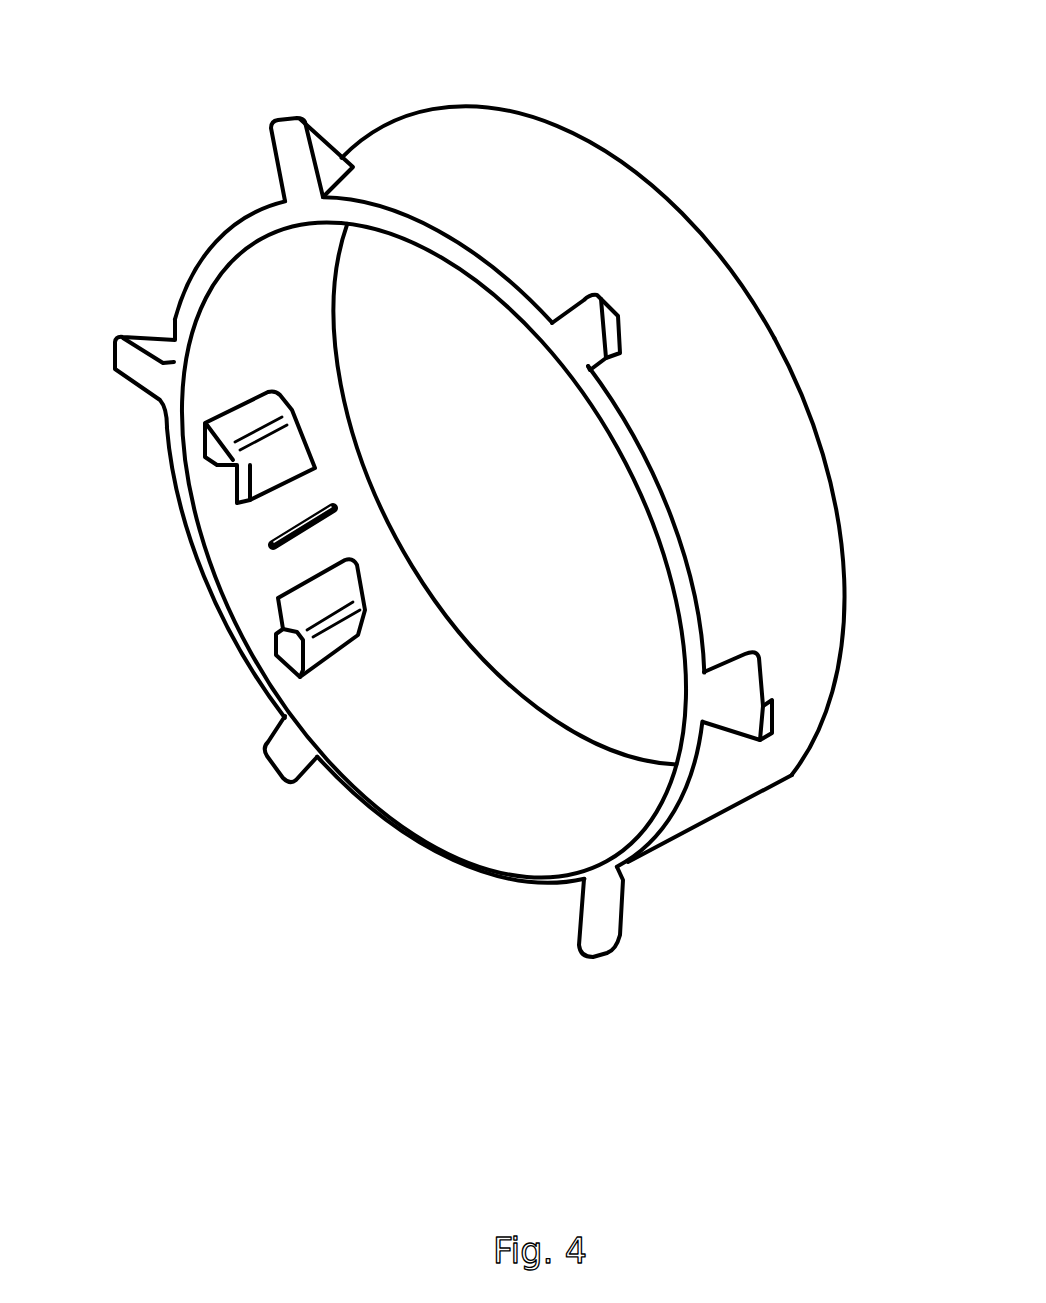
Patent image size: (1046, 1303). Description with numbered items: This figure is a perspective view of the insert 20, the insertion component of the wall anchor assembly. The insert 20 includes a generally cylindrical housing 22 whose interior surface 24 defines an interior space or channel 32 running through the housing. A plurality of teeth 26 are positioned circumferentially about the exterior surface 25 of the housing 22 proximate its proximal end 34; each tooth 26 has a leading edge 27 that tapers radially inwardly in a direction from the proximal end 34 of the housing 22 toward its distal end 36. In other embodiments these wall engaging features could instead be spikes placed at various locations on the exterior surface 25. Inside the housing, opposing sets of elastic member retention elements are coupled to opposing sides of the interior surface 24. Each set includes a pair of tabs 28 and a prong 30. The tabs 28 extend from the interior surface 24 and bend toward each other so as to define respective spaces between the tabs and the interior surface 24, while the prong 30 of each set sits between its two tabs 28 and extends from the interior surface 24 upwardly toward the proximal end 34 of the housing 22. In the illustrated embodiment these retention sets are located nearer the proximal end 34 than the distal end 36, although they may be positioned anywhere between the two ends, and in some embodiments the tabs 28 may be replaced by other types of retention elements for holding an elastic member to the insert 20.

The insert 20 is at (775, 334).
The housing 22 is at (547, 140).
The interior surface 24 is at (257, 265).
The exterior surface 25 is at (827, 600).
The teeth 26 is at (280, 143).
The leading edge 27 is at (321, 133).
The tabs 28 is at (253, 483).
The prong 30 is at (283, 550).
The channel 32 is at (550, 509).
The proximal end 34 is at (273, 680).
The distal end 36 is at (840, 668).